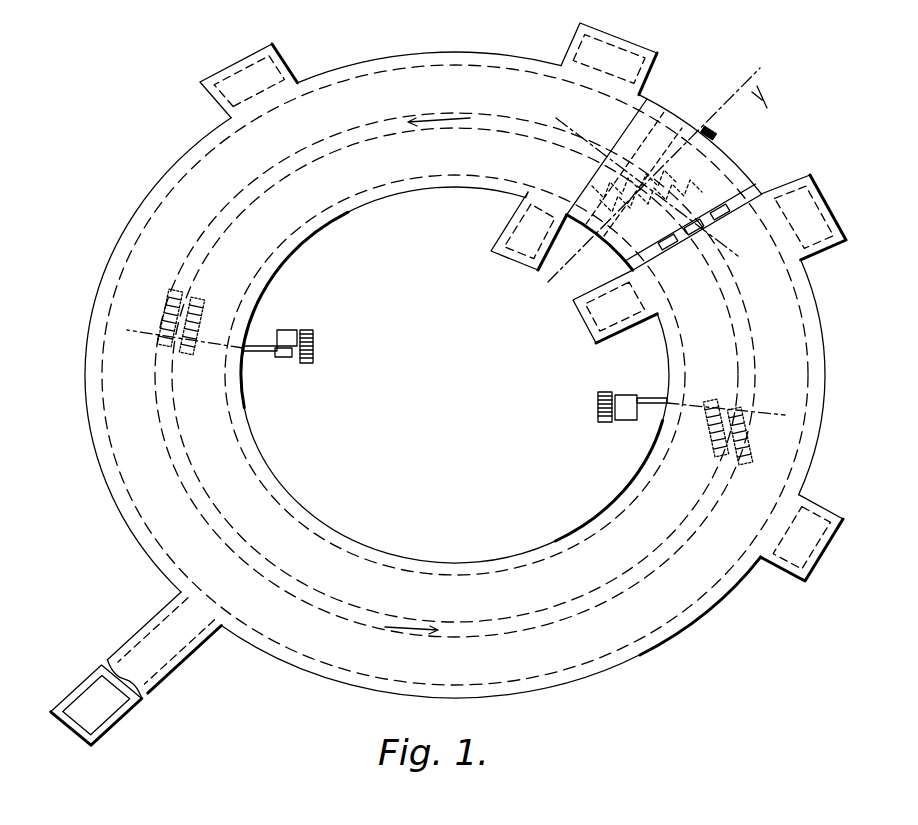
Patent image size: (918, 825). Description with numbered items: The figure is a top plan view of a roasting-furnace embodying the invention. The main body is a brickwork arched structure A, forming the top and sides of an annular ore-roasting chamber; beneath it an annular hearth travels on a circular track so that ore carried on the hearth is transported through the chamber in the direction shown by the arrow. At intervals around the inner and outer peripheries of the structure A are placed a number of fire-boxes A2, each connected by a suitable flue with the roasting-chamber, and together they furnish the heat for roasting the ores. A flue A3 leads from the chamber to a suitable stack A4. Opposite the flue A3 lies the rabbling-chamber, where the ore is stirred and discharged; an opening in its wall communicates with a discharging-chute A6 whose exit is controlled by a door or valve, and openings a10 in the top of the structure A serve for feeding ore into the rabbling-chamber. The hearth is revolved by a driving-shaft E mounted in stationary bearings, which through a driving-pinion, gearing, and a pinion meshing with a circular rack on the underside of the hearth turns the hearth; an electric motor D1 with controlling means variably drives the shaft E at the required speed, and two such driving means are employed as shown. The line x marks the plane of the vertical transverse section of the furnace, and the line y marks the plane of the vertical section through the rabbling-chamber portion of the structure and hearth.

The brickwork arched structure A is at (455, 375).
The fire-boxes A2 is at (523, 302).
The flue A3 is at (164, 645).
The stack A4 is at (96, 705).
The discharging-chute A6 is at (706, 128).
The openings a10 is at (694, 228).
The electric motor D1 is at (620, 420).
The driving-shaft E is at (652, 404).
The section line x- x is at (652, 173).
The section line y- y is at (639, 184).